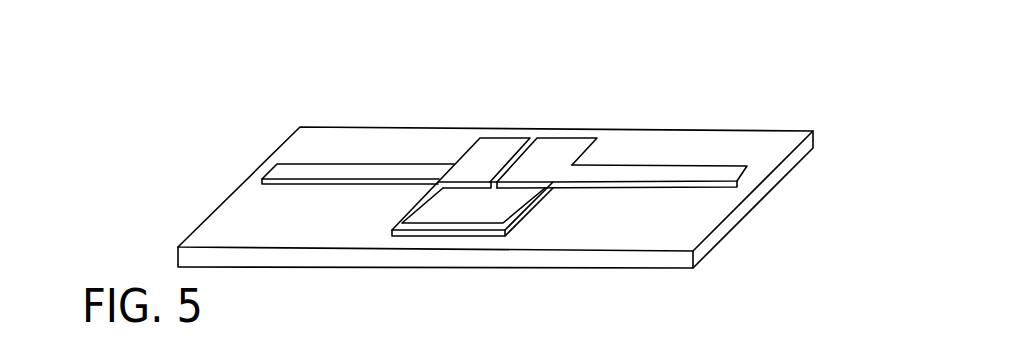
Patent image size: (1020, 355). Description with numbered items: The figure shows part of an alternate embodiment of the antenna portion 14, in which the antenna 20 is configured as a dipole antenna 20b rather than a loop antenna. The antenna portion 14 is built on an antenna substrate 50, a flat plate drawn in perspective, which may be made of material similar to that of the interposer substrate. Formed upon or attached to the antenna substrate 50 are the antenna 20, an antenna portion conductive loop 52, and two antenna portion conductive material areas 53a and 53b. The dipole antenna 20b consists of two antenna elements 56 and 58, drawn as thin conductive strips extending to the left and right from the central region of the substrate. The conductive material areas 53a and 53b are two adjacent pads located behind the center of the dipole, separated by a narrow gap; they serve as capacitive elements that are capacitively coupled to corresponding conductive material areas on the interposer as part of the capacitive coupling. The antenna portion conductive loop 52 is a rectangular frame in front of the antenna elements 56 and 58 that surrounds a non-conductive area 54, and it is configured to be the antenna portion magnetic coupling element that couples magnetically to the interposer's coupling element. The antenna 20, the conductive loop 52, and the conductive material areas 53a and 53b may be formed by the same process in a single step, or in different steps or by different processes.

The antenna portion 14 is at (327, 118).
The antenna 20 is at (385, 145).
The dipole antenna 20b is at (323, 153).
The antenna substrate 50 is at (608, 258).
The antenna portion conductive loop 52 is at (460, 235).
The antenna portion conductive material area 53a is at (502, 143).
The antenna portion conductive material area 53b is at (563, 143).
The non-conductive area 54 is at (438, 215).
The antenna element 56 is at (300, 177).
The antenna element 58 is at (672, 176).